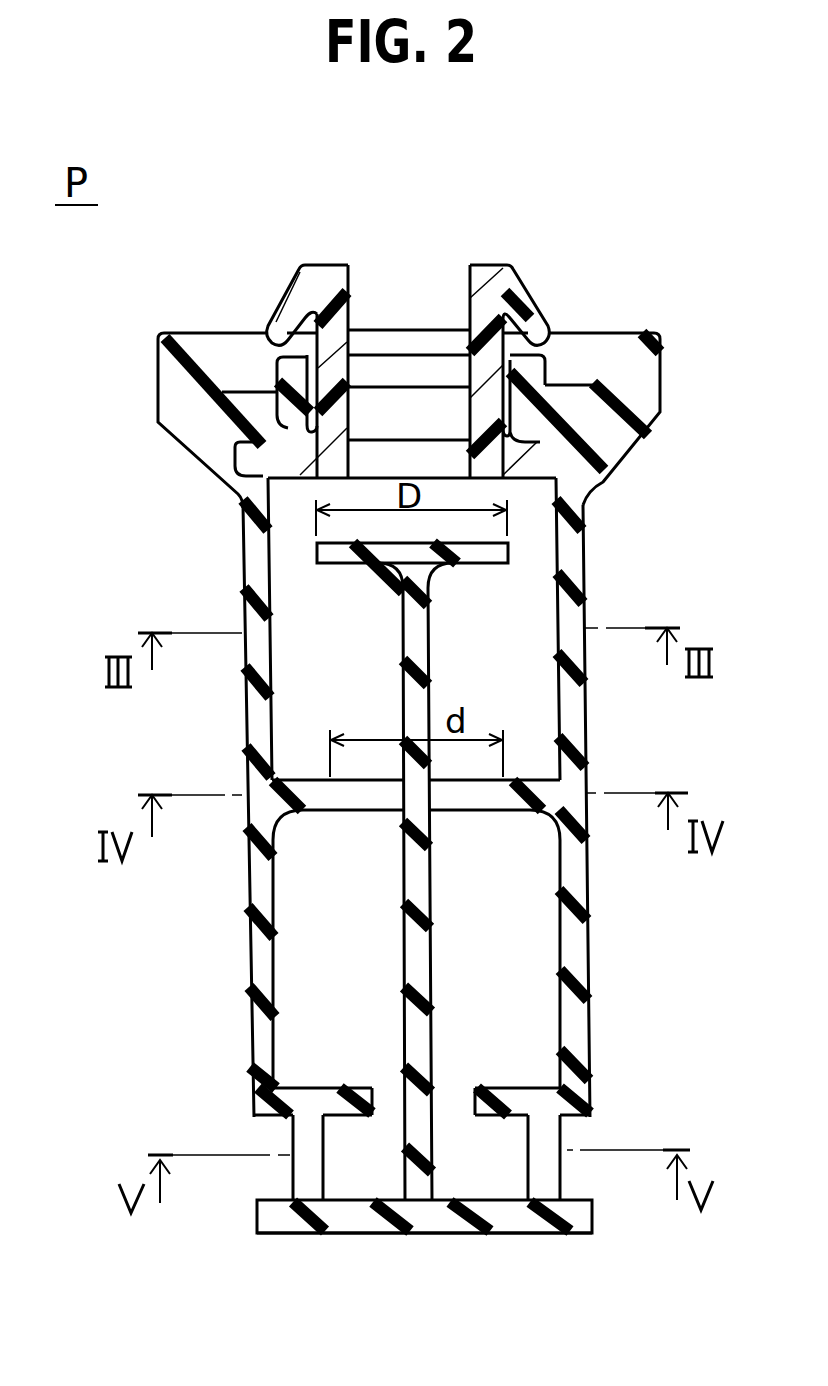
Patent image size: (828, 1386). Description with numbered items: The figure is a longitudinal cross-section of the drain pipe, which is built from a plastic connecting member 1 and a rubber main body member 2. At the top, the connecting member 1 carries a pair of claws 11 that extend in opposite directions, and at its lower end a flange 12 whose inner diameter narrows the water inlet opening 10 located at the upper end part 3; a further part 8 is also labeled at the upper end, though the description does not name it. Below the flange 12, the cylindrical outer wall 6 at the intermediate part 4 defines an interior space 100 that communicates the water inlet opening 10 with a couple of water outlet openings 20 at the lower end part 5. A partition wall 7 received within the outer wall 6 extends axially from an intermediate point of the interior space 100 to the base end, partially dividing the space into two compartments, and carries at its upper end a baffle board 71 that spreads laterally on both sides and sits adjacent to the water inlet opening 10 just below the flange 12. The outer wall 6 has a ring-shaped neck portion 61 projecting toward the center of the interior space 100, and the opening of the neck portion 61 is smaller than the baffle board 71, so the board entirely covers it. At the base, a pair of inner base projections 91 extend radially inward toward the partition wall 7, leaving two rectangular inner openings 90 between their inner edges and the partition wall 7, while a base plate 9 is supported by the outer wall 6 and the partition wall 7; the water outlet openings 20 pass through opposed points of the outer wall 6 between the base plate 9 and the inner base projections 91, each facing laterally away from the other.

The connecting member 1 is at (330, 264).
The main body member 2 is at (183, 330).
The upper end part 3 is at (126, 438).
The intermediate part 4 is at (214, 753).
The lower end part 5 is at (226, 1219).
The cylindrical outer wall 6 is at (578, 690).
The partition wall 7 is at (430, 955).
The flange right side portion 8 is at (650, 400).
The base plate 9 is at (583, 1213).
The water inlet opening 10 is at (419, 409).
The claws 11 is at (284, 318).
The flange 12 is at (577, 452).
The water outlet openings 20 is at (245, 1144).
The neck portion 61 is at (513, 800).
The baffle board 71 is at (488, 553).
The inner openings 90 is at (392, 1069).
The inner base projections 91 is at (333, 1088).
The interior space 100 is at (536, 901).